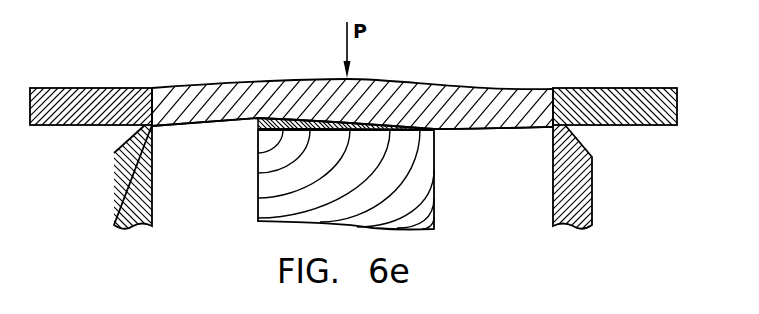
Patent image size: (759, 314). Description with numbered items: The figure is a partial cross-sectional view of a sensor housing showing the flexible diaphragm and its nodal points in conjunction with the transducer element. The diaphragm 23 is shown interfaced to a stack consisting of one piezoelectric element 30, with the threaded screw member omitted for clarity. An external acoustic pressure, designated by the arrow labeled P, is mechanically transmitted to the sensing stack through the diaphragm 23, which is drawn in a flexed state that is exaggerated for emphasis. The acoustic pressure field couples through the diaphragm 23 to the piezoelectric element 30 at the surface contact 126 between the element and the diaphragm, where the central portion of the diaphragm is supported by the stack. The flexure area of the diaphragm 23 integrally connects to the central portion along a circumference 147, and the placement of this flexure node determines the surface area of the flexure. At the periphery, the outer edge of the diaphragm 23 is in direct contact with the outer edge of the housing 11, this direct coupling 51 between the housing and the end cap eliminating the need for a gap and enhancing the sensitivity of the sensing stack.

The diaphragm 23 is at (152, 88).
The housing 11 is at (353, 166).
The direct coupling 51 is at (114, 188).
The circumference 147 is at (247, 128).
The surface contact 126 is at (249, 130).
The piezoelectric element 30 is at (435, 183).